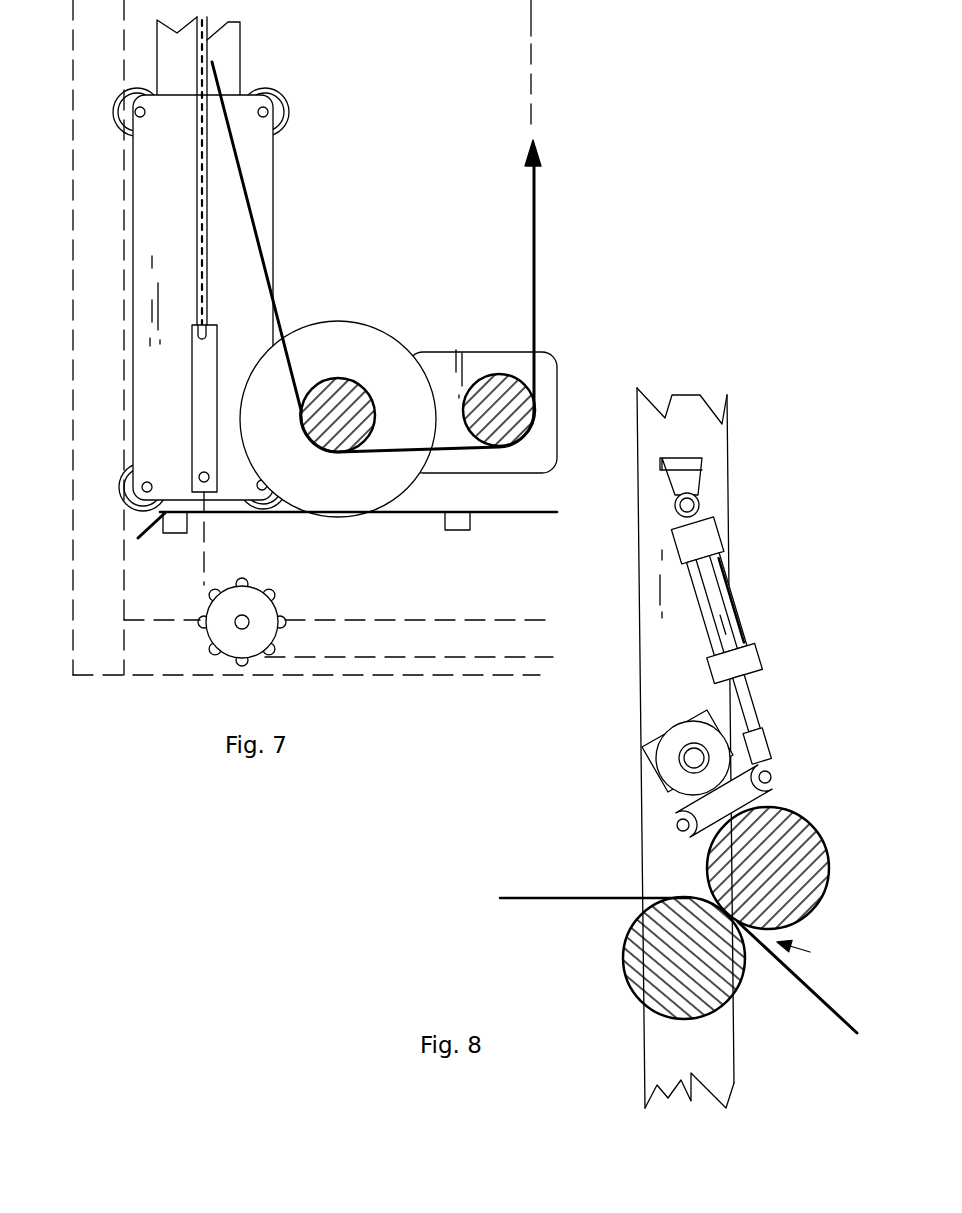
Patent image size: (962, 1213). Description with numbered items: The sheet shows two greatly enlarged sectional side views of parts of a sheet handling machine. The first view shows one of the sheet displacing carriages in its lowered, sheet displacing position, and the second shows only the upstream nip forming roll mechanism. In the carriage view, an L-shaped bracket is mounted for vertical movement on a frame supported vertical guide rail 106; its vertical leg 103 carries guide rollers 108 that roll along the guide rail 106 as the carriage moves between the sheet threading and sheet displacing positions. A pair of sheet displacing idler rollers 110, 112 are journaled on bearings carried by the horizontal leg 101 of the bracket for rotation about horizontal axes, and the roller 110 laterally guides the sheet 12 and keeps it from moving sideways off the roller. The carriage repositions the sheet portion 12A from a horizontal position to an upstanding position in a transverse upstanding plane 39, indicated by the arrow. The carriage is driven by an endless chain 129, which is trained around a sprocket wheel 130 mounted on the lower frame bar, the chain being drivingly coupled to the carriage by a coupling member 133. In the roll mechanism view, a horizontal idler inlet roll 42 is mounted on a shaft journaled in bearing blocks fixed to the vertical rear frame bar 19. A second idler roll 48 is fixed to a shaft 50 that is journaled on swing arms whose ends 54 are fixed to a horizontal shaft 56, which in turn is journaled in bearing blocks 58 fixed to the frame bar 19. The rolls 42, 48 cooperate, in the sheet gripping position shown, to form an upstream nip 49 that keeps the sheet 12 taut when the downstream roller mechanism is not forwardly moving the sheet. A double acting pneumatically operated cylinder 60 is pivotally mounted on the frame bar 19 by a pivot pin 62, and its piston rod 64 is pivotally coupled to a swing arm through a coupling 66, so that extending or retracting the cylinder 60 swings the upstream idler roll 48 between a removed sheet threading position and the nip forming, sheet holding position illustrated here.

In FIG. 7, the sheet 12 is at (257, 237).
In FIG. 7, the sheet portion 12A is at (534, 193).
In FIG. 8, the rear frame bar 19 is at (713, 495).
In FIG. 7, the transverse upstanding plane 39 is at (532, 32).
In FIG. 8, the sheet receiving inlet roll 42 is at (623, 957).
In FIG. 8, the second idler roll 48 is at (760, 862).
In FIG. 8, the upstream nip 49 is at (810, 955).
In FIG. 8, the shaft 50 is at (717, 723).
In FIG. 8, the swing arm ends 54 is at (662, 737).
In FIG. 8, the horizontal shaft 56 is at (695, 760).
In FIG. 8, the bearing blocks 58 is at (693, 737).
In FIG. 8, the double acting pneumatically operated cylinder 60 is at (738, 605).
In FIG. 8, the pivot pin 62 is at (695, 510).
In FIG. 8, the piston rod 64 is at (750, 717).
In FIG. 8, the coupling 66 is at (767, 777).
In FIG. 7, the horizontal leg 101 is at (437, 352).
In FIG. 7, the vertical leg 103 is at (277, 283).
In FIG. 7, the vertical guide rail 106 is at (240, 52).
In FIG. 7, the guide rollers 108 is at (289, 112).
In FIG. 7, the sheet displacing idler roller 110 is at (343, 440).
In FIG. 7, the sheet displacing idler roller 112 is at (502, 432).
In FIG. 7, the endless chain 129 is at (452, 618).
In FIG. 7, the sprocket wheel 130 is at (260, 612).
In FIG. 7, the coupling member 133 is at (203, 448).